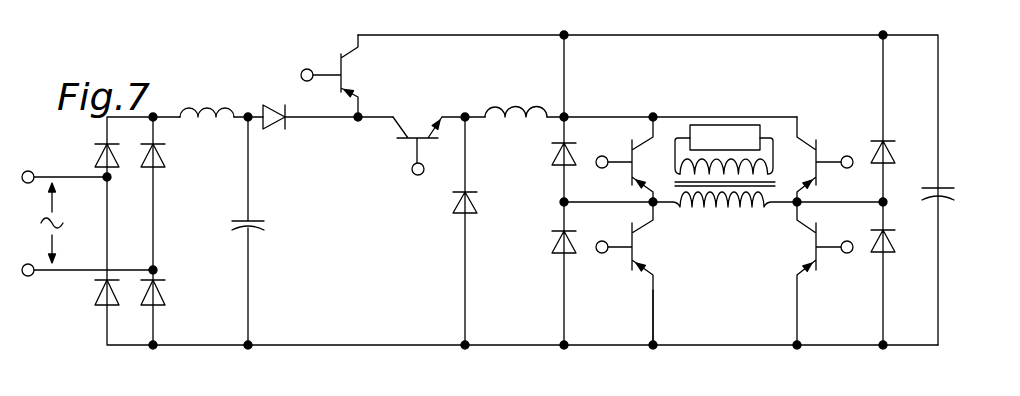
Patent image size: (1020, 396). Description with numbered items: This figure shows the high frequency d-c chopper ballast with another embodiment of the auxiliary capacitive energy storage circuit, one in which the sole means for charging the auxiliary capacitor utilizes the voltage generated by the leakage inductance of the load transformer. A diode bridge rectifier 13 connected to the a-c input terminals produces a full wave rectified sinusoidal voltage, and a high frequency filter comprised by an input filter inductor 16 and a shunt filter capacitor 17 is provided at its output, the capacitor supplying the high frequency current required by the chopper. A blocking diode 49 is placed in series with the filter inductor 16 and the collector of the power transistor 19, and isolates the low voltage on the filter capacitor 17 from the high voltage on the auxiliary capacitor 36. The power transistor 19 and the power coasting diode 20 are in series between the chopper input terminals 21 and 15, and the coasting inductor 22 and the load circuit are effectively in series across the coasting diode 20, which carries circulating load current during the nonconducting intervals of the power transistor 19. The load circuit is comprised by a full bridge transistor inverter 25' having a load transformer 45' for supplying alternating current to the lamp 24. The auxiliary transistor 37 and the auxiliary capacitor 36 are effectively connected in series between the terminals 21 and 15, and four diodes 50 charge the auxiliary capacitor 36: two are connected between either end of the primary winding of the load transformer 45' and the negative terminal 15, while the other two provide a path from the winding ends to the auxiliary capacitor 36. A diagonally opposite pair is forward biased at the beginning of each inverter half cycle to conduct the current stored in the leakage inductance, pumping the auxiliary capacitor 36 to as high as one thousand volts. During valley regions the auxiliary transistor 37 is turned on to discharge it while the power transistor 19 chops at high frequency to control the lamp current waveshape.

The diode bridge rectifier 13 is at (142, 226).
The input filter inductor 16 is at (206, 120).
The blocking diode 49 is at (269, 128).
The shunt filter capacitor 17 is at (257, 229).
The chopper input terminal 21 is at (328, 120).
The auxiliary transistor 37 is at (346, 58).
The power transistor 19 is at (407, 144).
The coasting inductor 22 is at (507, 120).
The power coasting diode 20 is at (462, 206).
The negative chopper input terminal 15 is at (385, 345).
The diodes 50 is at (576, 149).
The lamp 24 is at (705, 125).
The load transformer 45' is at (725, 216).
The full bridge transistor inverter 25' is at (677, 315).
The auxiliary capacitor 36 is at (934, 185).